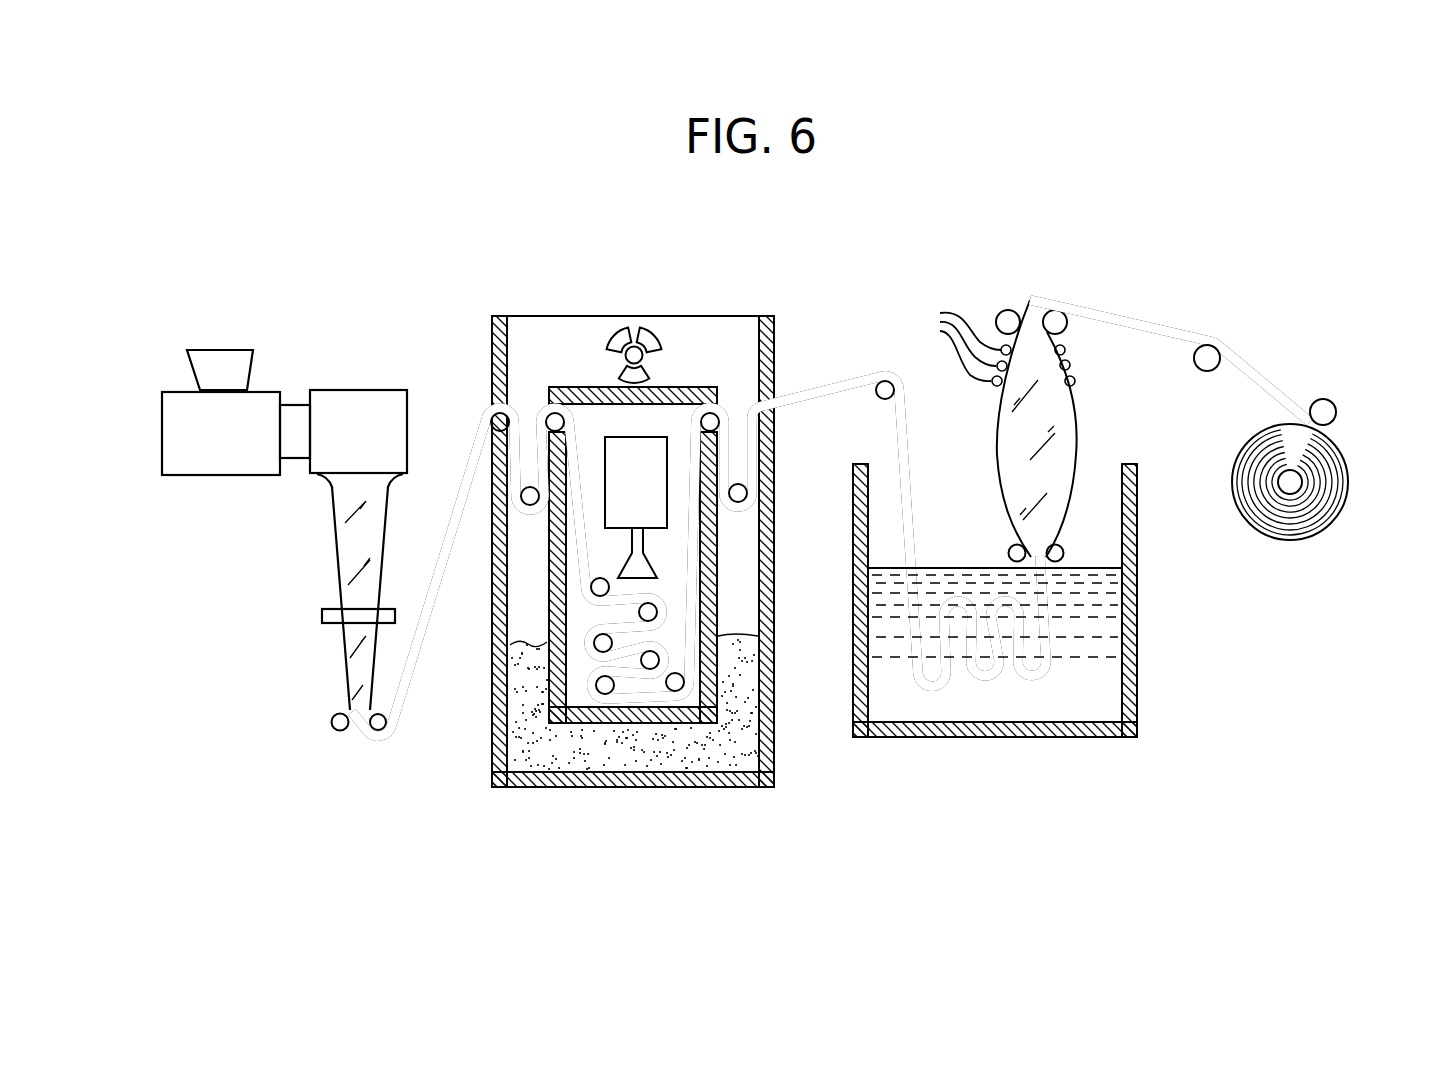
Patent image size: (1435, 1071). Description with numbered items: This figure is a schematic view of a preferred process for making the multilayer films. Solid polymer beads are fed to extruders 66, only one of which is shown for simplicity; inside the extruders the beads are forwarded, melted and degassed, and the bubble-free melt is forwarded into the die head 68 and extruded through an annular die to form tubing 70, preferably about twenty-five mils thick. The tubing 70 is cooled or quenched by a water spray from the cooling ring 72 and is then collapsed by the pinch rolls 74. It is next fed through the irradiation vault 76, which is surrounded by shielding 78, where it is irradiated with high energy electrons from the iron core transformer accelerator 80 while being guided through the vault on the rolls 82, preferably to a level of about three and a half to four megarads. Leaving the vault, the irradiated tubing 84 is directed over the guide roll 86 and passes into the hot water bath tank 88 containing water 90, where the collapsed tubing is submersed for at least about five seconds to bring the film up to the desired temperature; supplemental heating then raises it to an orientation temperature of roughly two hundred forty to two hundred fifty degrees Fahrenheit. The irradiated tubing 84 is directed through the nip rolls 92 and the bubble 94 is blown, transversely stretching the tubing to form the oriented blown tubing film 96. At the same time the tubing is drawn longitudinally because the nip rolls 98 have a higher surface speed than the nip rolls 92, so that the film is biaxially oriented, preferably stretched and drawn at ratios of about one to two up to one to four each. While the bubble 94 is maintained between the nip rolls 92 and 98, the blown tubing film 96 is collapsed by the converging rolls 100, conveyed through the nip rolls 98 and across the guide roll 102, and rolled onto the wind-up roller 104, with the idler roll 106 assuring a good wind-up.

The extruder 66 is at (162, 432).
The die head 68 is at (352, 397).
The tubing 70 is at (332, 494).
The cooling ring 72 is at (322, 616).
The pinch rolls 74 is at (332, 723).
The irradiation vault 76 is at (720, 598).
The shielding 78 is at (657, 758).
The iron core transformer accelerator 80 is at (650, 491).
The rolls 82 is at (597, 582).
The irradiated tubing 84 is at (805, 400).
The guide roll 86 is at (880, 396).
The hot water bath tank 88 is at (1138, 680).
The water 90 is at (1095, 603).
The nip rolls 92 is at (1012, 547).
The bubble 94 is at (1015, 397).
The blown tubing film 96 is at (1075, 443).
The nip rolls 98 is at (1068, 330).
The converging rolls 100 is at (957, 348).
The guide roll 102 is at (1207, 372).
The wind-up roller 104 is at (1302, 485).
The idler roll 106 is at (1331, 400).